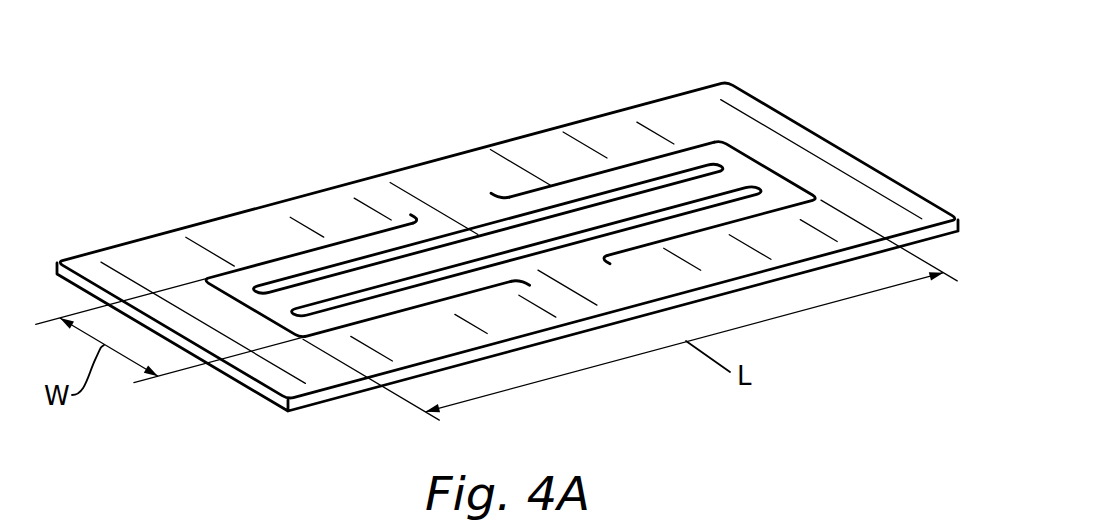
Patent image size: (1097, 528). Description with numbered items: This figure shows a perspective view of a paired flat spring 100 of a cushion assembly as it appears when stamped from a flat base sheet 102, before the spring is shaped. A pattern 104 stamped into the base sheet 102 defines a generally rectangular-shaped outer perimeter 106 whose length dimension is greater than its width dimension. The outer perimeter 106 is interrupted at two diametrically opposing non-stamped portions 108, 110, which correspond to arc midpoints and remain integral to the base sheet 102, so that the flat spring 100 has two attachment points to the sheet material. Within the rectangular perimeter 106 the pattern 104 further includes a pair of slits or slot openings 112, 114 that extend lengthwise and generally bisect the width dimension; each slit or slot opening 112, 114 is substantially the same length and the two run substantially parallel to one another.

The paired flat spring 100 is at (244, 100).
The base sheet 102 is at (850, 152).
The pattern 104 is at (635, 155).
The generally rectangular-shaped outer perimeter 106 is at (770, 168).
The non-stamped portion 108 is at (578, 275).
The non-stamped portion 110 is at (440, 199).
The slit or slot opening 112 is at (580, 179).
The slit or slot opening 114 is at (333, 302).